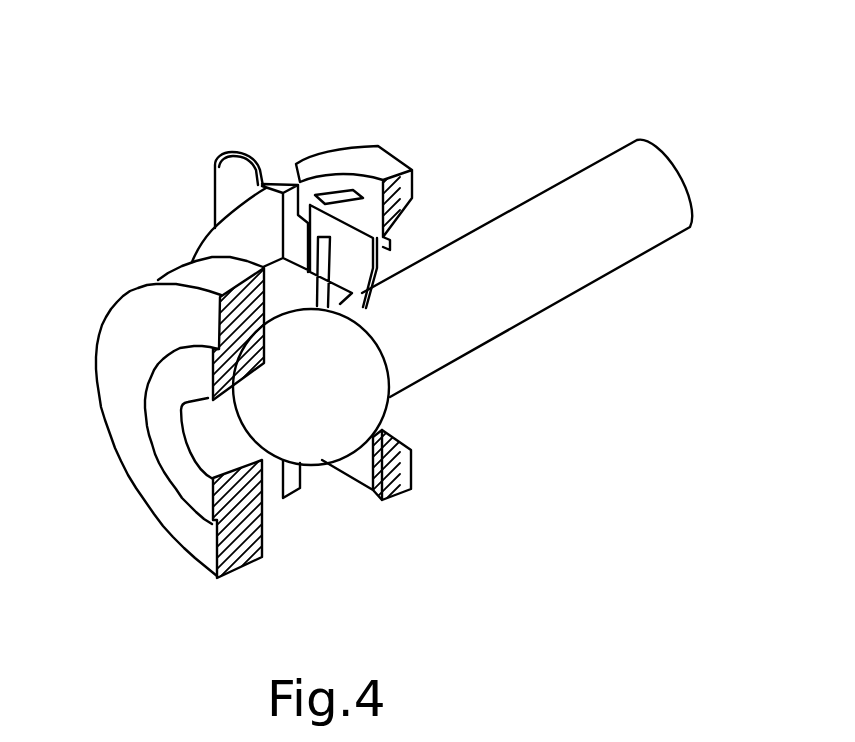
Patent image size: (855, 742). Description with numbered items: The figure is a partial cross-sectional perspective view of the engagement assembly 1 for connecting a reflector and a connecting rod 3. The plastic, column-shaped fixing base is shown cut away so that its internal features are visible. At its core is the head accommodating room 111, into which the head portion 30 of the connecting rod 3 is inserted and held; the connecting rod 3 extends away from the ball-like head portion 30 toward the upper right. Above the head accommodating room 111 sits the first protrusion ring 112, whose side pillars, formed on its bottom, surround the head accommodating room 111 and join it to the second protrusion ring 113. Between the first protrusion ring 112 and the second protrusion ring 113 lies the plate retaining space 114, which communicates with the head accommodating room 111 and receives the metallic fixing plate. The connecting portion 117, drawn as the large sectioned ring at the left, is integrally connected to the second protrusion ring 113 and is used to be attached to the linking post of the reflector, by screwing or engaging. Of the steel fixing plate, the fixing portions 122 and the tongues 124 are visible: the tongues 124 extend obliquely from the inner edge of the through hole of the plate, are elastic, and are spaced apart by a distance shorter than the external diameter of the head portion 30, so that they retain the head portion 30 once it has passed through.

The engagement assembly 1 is at (108, 99).
The connecting rod 3 is at (655, 218).
The head portion 30 is at (353, 405).
The head accommodating room 111 is at (330, 490).
The first protrusion ring 112 is at (377, 163).
The second protrusion ring 113 is at (272, 165).
The plate retaining space 114 is at (340, 172).
The connecting portion 117 is at (118, 318).
The fixing portions 122 is at (214, 165).
The tongues 124 is at (350, 280).